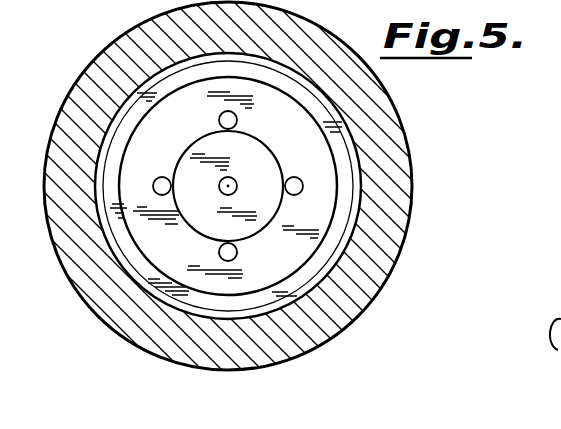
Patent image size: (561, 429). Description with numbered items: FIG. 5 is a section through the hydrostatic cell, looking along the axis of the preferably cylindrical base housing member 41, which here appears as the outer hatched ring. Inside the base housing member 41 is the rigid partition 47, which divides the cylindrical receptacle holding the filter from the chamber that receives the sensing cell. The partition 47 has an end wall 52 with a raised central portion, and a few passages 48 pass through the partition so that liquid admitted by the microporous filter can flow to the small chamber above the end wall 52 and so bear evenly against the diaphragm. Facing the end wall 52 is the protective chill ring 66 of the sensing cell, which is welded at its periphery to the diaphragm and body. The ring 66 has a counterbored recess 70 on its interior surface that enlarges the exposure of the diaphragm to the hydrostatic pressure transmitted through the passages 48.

The base housing member 41 is at (390, 127).
The rigid partition 47 is at (190, 132).
The passages 48 is at (237, 119).
The end wall 52 is at (333, 110).
The protective chill ring 66 is at (362, 172).
The counterbored recess 70 is at (328, 224).